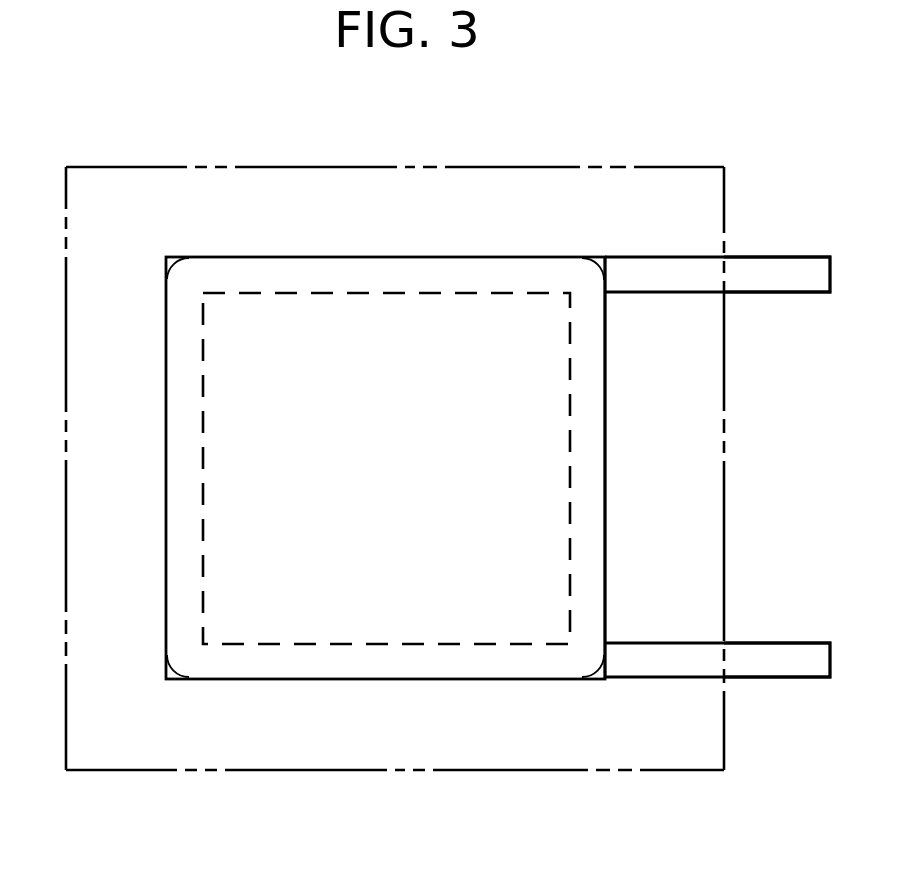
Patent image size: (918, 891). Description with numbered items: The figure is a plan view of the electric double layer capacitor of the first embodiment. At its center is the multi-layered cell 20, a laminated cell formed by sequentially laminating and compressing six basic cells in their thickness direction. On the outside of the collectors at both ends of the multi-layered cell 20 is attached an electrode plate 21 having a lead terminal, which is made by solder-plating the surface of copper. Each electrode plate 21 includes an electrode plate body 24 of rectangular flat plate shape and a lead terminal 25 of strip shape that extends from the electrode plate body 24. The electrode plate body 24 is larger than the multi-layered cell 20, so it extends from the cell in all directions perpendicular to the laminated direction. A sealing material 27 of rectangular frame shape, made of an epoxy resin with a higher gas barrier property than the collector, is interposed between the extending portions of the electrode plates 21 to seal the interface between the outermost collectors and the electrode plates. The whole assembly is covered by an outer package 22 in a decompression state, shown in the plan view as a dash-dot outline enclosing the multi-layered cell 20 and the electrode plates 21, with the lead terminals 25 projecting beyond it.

The multi-layered cell 20 is at (377, 284).
The electrode plate having a lead terminal 21 is at (665, 250).
The outer package 22 is at (172, 167).
The electrode plate body 24 is at (393, 630).
The lead terminal 25 is at (797, 260).
The sealing material 27 is at (604, 255).